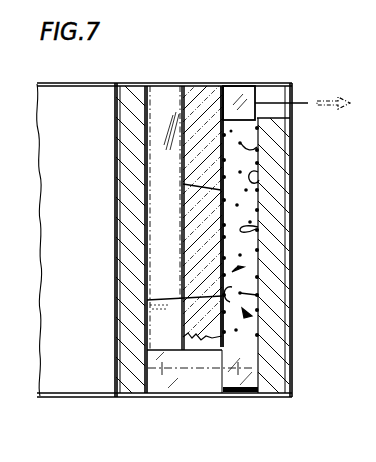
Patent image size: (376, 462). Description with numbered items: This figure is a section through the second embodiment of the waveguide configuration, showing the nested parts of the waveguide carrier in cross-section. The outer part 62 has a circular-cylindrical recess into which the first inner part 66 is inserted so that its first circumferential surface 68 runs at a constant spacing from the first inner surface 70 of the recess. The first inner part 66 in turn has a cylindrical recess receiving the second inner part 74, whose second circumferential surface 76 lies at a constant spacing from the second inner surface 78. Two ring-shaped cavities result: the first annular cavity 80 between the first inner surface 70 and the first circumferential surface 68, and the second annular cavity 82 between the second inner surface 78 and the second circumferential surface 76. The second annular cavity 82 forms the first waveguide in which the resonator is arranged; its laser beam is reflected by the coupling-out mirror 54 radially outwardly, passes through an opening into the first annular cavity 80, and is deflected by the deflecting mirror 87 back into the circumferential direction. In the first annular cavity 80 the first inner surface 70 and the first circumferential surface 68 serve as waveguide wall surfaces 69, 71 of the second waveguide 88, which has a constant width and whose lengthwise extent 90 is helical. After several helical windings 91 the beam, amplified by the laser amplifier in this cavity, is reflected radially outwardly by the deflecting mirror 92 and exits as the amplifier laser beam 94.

The coupling-out mirror 54 is at (175, 383).
The outer part 62 is at (282, 231).
The first inner part 66 is at (199, 101).
The first circumferential surface 68 is at (221, 190).
The waveguide wall surface 69 is at (147, 300).
The first inner surface 70 is at (258, 176).
The waveguide wall surface 71 is at (258, 227).
The second inner part 74 is at (128, 128).
The second circumferential surface 76 is at (150, 237).
The second inner surface 78 is at (183, 120).
The first annular cavity 80 is at (248, 316).
The second annular cavity 82 is at (160, 333).
The deflecting mirror 87 is at (251, 374).
The second waveguide 88 is at (243, 268).
The lengthwise extent 90 is at (257, 147).
The helical windings 91 is at (257, 295).
The deflecting mirror 92 is at (245, 100).
The amplifier laser beam 94 is at (306, 101).